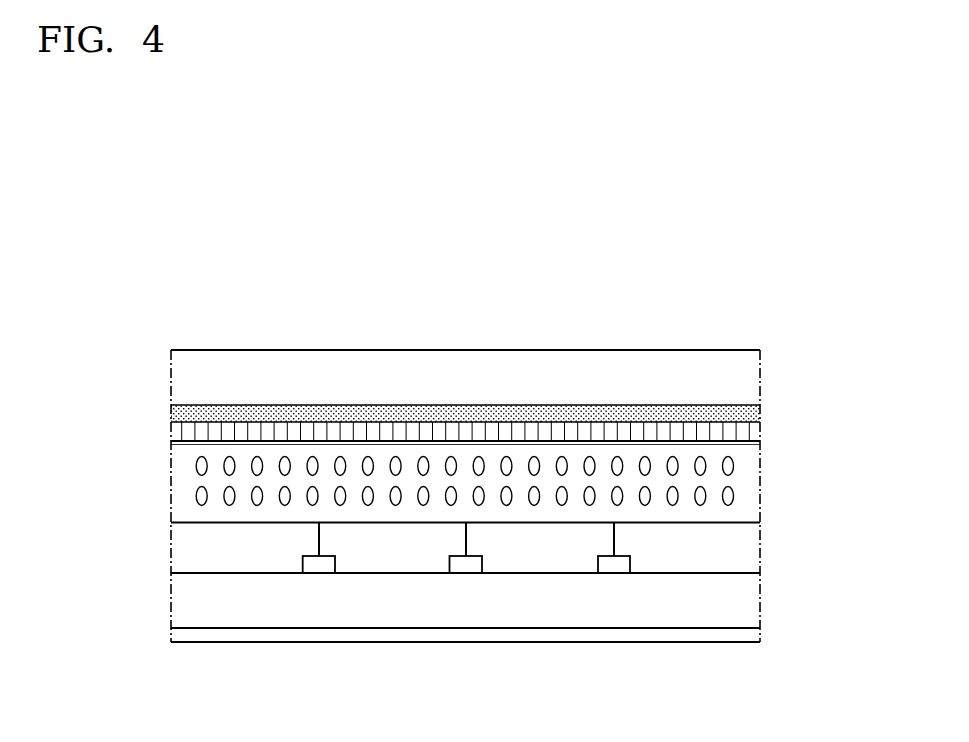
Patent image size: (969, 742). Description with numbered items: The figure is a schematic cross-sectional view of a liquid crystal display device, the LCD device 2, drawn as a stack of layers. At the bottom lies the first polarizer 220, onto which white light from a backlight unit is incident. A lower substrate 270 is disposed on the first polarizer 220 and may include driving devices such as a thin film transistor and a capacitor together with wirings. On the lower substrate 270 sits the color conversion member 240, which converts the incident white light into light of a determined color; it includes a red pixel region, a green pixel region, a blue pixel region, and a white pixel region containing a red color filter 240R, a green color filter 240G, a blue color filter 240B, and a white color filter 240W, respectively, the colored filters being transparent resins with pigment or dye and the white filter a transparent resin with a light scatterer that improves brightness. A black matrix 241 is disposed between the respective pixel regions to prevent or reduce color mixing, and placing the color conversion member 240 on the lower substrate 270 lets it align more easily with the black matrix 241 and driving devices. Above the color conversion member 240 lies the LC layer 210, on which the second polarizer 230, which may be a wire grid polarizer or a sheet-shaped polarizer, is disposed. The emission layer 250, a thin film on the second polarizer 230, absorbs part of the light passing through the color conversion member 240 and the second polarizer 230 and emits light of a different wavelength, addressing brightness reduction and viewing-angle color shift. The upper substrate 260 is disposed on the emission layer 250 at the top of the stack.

The LCD device 2 is at (792, 266).
The upper substrate 260 is at (752, 361).
The emission layer 250 is at (752, 412).
The second polarizer 230 is at (752, 430).
The LC layer 210 is at (752, 483).
The color conversion member 240 is at (773, 525).
The black matrix 241 is at (319, 565).
The red color filter 240R is at (227, 562).
The green color filter 240G is at (402, 562).
The blue color filter 240B is at (543, 562).
The white color filter 240W is at (685, 562).
The lower substrate 270 is at (752, 596).
The first polarizer 220 is at (752, 638).